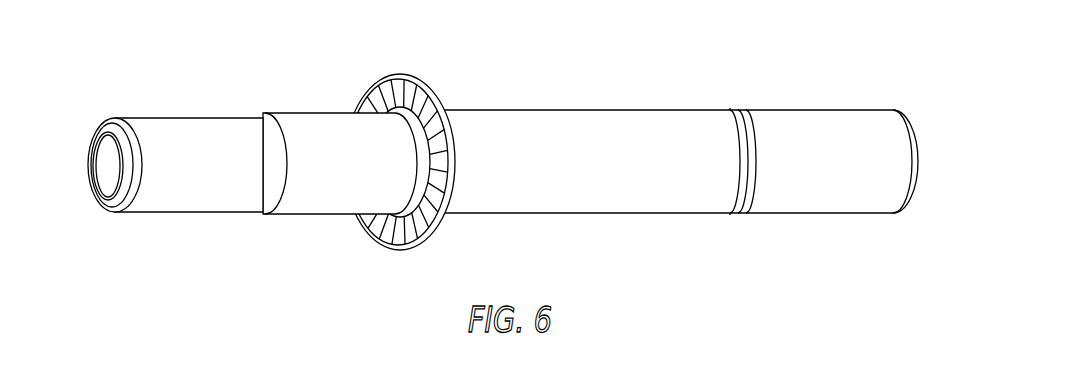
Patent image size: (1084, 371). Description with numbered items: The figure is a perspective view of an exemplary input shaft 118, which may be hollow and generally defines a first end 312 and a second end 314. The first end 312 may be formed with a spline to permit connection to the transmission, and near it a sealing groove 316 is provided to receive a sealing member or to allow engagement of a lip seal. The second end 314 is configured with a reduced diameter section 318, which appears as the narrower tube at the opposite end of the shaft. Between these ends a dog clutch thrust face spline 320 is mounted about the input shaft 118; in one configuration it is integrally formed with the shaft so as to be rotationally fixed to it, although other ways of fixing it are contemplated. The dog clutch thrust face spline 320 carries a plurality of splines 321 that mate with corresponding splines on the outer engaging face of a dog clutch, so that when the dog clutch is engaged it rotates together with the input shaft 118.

The input shaft 118 is at (852, 213).
The first end 312 is at (915, 108).
The second end 314 is at (88, 203).
The sealing groove 316 is at (745, 213).
The reduced diameter section 318 is at (188, 212).
The dog clutch thrust face spline 320 is at (400, 168).
The splines 321 is at (402, 78).